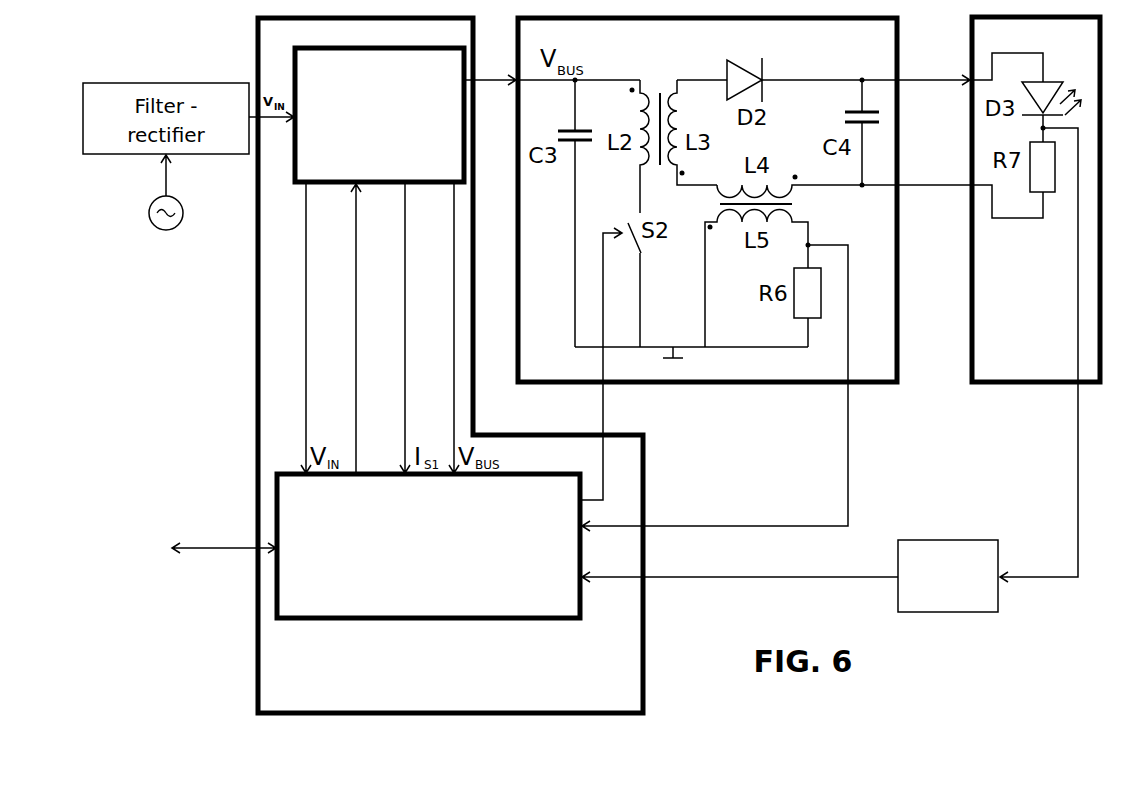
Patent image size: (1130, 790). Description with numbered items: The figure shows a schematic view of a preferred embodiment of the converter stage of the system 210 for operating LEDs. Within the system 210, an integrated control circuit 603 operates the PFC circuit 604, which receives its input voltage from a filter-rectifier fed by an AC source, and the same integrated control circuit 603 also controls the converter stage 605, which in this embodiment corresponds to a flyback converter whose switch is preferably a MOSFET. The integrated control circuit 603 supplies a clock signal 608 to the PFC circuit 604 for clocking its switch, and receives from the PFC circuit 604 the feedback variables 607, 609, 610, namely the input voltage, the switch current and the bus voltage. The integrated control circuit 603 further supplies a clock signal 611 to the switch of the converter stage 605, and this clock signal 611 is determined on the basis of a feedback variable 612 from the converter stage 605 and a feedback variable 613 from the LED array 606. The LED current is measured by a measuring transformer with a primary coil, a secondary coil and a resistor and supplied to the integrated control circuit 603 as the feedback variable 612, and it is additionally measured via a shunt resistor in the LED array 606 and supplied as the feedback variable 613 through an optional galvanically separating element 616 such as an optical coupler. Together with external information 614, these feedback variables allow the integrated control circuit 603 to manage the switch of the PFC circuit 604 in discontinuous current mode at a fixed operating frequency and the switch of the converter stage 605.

The system 210 is at (396, 365).
The integrated control circuit 603 is at (428, 546).
The PFC circuit 604 is at (379, 115).
The converter stage 605 is at (707, 200).
The LED array 606 is at (1036, 199).
The feedback variable 607 is at (289, 327).
The clock signal 608 is at (339, 328).
The feedback variable 609 is at (388, 327).
The feedback variable 610 is at (437, 327).
The clock signal 611 is at (616, 364).
The feedback variable 612 is at (715, 401).
The feedback variable 613 is at (740, 592).
The information 614 is at (224, 535).
The galvanically separating element 616 is at (988, 370).